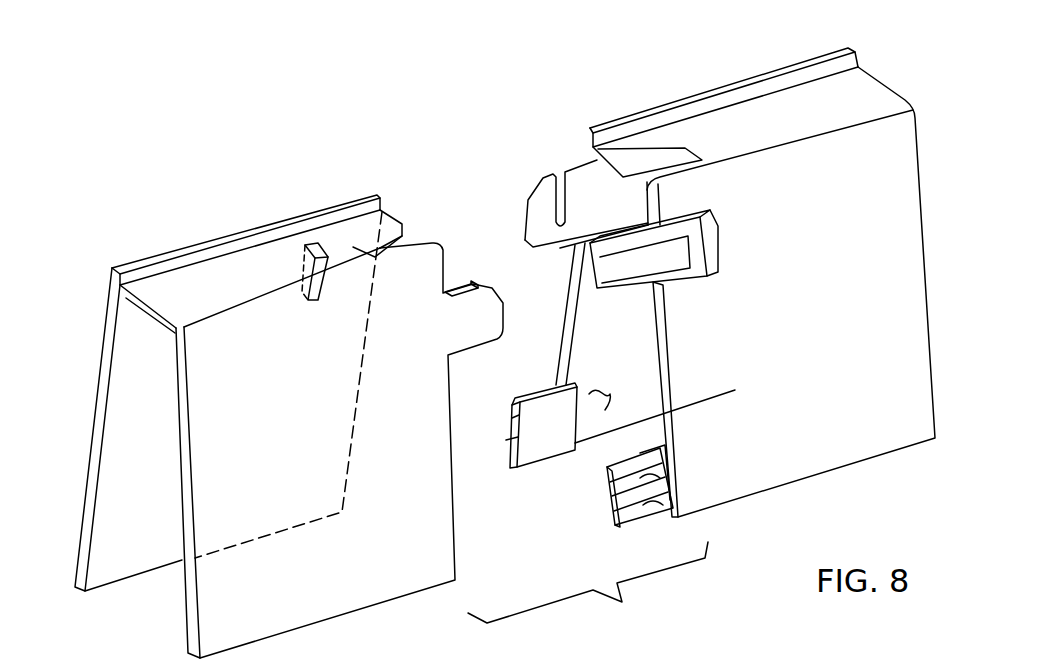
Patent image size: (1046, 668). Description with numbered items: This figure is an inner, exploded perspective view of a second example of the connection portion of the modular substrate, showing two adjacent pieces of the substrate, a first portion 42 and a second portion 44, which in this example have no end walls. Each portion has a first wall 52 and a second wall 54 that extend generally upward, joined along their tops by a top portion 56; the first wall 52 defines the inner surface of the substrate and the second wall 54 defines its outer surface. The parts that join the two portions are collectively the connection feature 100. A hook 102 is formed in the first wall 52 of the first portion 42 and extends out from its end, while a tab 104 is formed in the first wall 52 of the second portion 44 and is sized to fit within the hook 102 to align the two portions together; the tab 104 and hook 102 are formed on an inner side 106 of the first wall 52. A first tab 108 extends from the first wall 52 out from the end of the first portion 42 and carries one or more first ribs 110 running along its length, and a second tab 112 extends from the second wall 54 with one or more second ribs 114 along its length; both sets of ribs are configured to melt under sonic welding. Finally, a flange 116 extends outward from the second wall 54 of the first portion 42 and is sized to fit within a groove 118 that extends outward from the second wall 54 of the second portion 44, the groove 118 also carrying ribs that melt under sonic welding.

The first portion 42 is at (692, 80).
The second portion 44 is at (231, 222).
The first wall 52 is at (105, 386).
The second wall 54 is at (186, 507).
The top portion 56 is at (141, 307).
The connection feature 100 is at (588, 589).
The hook 102 is at (578, 192).
The tab 104 is at (328, 304).
The inner side 106 is at (608, 411).
The first tab 108 is at (530, 410).
The first ribs 110 is at (512, 418).
The second tab 112 is at (607, 500).
The second ribs 114 is at (672, 512).
The flange 116 is at (640, 262).
The groove 118 is at (448, 287).